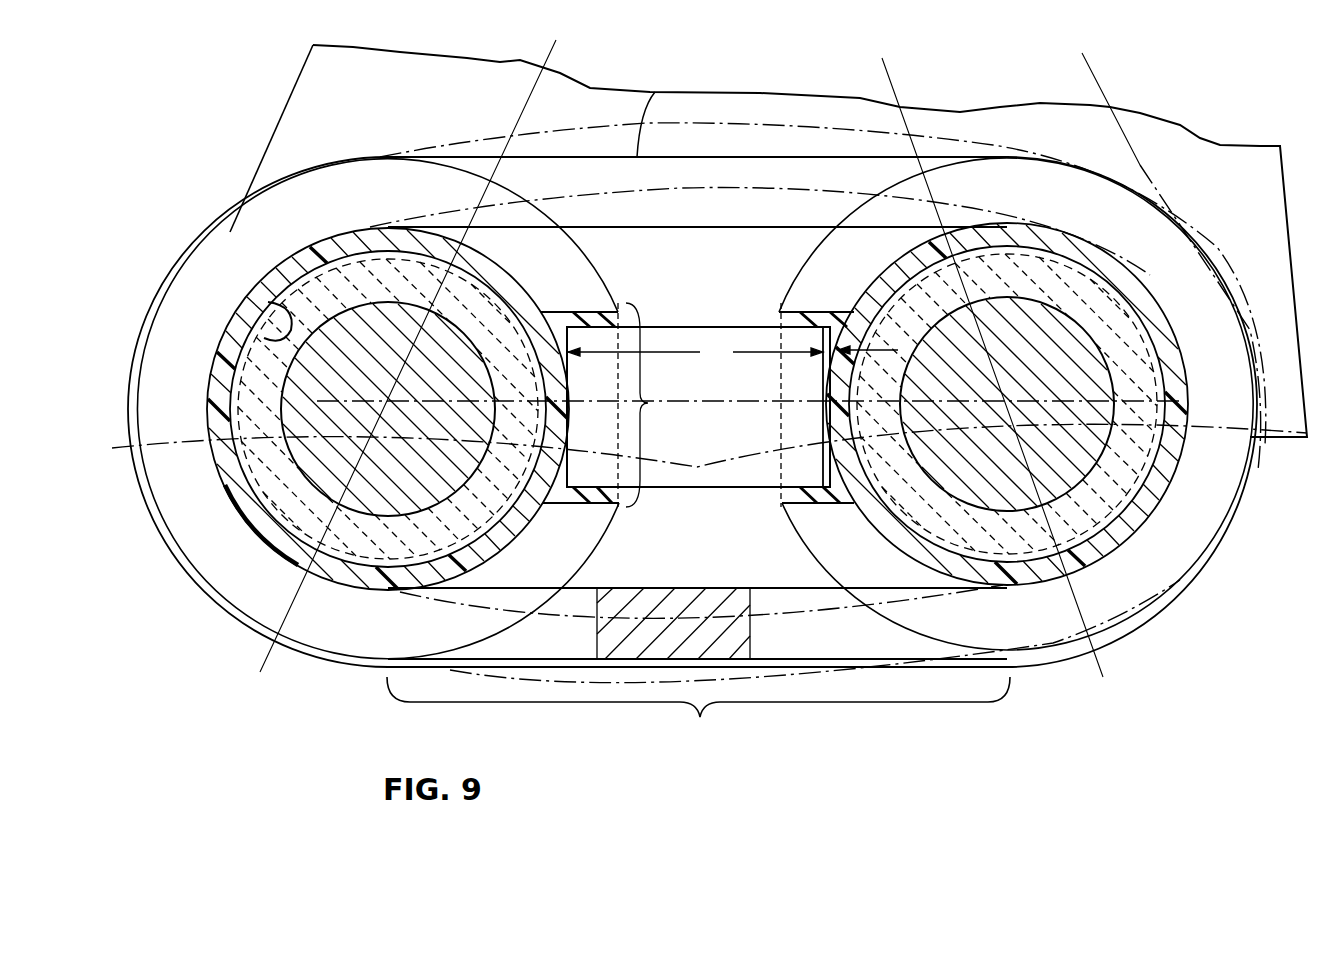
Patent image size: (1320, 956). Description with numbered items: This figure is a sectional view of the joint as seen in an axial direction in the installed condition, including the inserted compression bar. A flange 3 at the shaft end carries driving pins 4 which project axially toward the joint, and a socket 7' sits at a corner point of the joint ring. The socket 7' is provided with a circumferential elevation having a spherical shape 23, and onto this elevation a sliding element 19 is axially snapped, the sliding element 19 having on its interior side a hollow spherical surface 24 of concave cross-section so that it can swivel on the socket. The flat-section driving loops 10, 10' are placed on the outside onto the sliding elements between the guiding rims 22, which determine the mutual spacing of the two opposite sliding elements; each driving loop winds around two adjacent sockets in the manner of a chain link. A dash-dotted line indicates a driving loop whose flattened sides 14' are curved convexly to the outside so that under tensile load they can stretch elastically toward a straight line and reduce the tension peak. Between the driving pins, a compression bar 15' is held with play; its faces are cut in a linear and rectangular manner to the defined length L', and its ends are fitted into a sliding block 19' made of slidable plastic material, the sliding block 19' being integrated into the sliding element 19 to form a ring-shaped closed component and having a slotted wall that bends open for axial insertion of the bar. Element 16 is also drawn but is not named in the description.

The flange 3 is at (297, 98).
The driving loop 10 is at (692, 412).
The driving loop 10' is at (709, 361).
The driving pin 4 is at (363, 357).
The socket 7' is at (680, 404).
The sliding element 19 is at (388, 409).
The spherical shape 23 is at (1060, 252).
The hollow spherical surface 24 is at (268, 338).
The guiding rim 22 is at (817, 283).
The compression bar 15' is at (697, 405).
The end plate 16 is at (825, 340).
The sliding block 19' is at (799, 378).
The defined length L' is at (695, 357).
The curved flattened side 14' is at (698, 674).